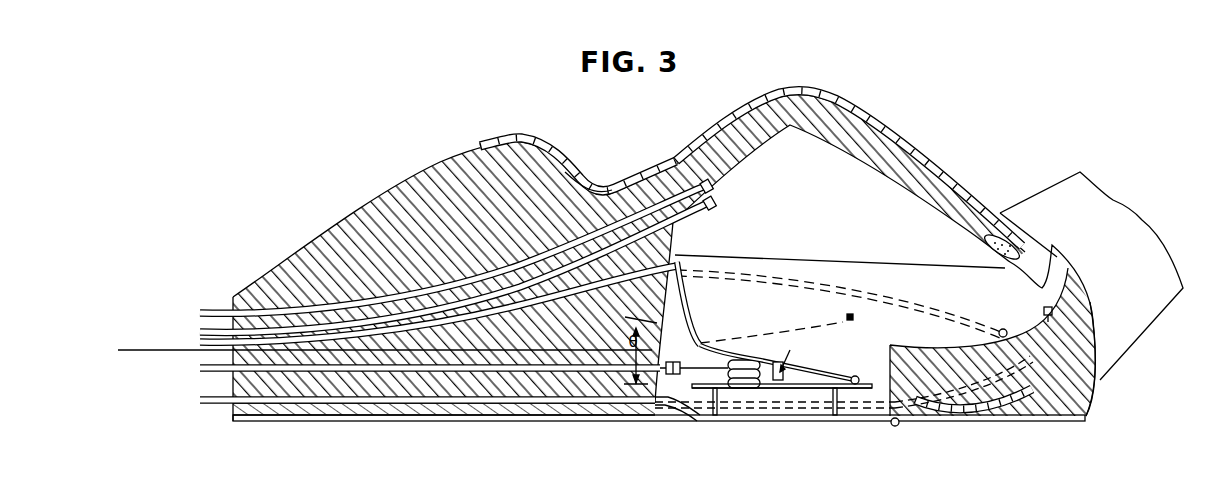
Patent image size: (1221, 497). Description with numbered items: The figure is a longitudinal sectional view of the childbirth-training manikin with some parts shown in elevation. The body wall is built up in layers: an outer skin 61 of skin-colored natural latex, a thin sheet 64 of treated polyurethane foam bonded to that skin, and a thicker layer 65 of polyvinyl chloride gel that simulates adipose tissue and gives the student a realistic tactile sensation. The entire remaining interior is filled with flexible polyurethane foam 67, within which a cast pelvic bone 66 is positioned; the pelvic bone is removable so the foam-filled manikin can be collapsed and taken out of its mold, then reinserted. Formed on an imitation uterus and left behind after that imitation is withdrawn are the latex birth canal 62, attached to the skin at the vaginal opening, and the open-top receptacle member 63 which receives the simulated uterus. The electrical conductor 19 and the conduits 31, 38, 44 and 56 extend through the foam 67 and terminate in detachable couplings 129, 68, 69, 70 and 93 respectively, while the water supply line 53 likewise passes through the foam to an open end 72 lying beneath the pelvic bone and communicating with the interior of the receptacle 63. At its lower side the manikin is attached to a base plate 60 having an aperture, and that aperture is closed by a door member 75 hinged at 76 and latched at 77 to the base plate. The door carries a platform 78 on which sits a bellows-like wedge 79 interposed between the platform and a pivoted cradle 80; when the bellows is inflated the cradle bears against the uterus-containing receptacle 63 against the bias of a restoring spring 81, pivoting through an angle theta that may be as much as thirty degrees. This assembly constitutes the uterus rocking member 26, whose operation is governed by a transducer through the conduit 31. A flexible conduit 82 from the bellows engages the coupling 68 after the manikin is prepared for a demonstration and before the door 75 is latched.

The electrical conductor 19 is at (125, 351).
The uterus rocking member 26 is at (858, 398).
The conduit 31 is at (200, 368).
The conduit 38 is at (205, 330).
The conduit 44 is at (205, 311).
The water supply line 53 is at (215, 405).
The conduit 56 is at (195, 341).
The base plate 60 is at (430, 423).
The skin 61 is at (515, 140).
The birth canal 62 is at (1062, 260).
The open-top receptacle member 63 is at (924, 275).
The sheet of polyurethane foam 64 is at (793, 99).
The layer of polyvinyl chloride gel 65 is at (588, 186).
The pelvic bone 66 is at (1010, 240).
The flexible polyurethane foam 67 is at (365, 212).
The detachable coupling 68 is at (673, 361).
The detachable coupling 69 is at (716, 203).
The detachable coupling 70 is at (712, 186).
The open end of water supply line 72 is at (1042, 310).
The door member 75 is at (752, 423).
The hinge 76 is at (896, 426).
The latch 77 is at (665, 408).
The platform 78 is at (803, 390).
The bellows-like wedge 79 is at (752, 360).
The pivoted cradle 80 is at (826, 368).
The spring 81 is at (786, 362).
The flexible conduit 82 is at (696, 349).
The detachable coupling 93 is at (1001, 329).
The detachable coupling 129 is at (853, 317).